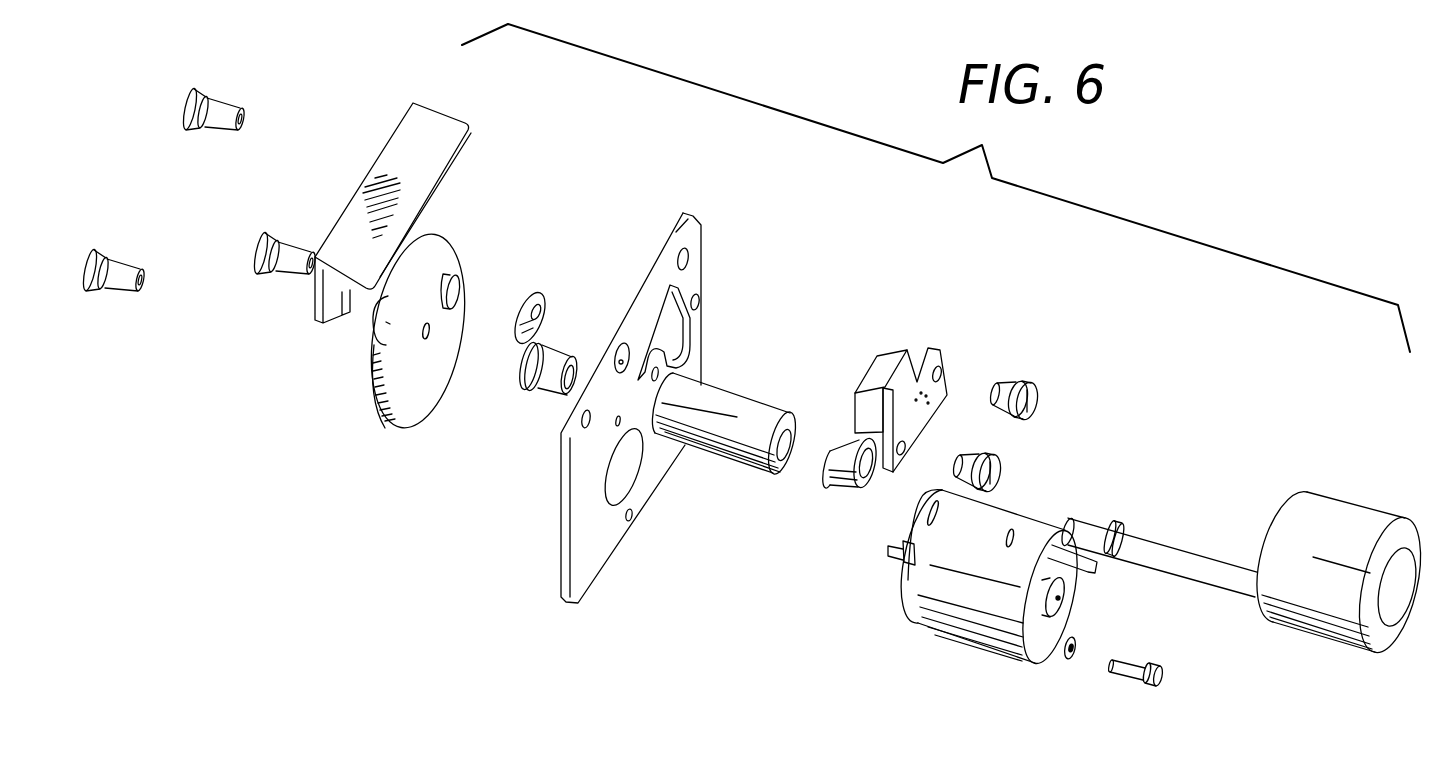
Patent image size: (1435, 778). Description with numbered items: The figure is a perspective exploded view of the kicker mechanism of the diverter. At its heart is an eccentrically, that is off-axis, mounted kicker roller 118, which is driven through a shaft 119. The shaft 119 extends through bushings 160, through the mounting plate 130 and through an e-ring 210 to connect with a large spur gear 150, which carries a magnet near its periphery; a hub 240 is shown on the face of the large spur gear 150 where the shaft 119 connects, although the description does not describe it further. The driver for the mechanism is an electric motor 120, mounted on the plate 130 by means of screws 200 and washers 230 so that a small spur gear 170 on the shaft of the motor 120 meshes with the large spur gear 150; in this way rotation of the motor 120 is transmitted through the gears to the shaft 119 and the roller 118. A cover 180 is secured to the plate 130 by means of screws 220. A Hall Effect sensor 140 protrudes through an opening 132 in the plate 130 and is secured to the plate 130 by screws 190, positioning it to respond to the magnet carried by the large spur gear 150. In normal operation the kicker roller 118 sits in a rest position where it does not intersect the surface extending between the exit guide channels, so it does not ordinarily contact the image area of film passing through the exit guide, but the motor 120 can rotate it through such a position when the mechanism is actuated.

The kicker roller 118 is at (1327, 515).
The shaft 119 is at (1148, 547).
The electric motor 120 is at (967, 603).
The mounting plate 130 is at (697, 270).
The opening 132 is at (665, 328).
The Hall Effect sensor 140 is at (883, 363).
The large spur gear 150 is at (443, 258).
The bushings 160 is at (547, 377).
The small spur gear 170 is at (900, 565).
The cover 180 is at (458, 120).
The screws 190 is at (1002, 380).
The screws 200 is at (1097, 572).
The e-ring 210 is at (537, 288).
The screws 220 is at (230, 104).
The washers 230 is at (1072, 657).
The hub 240 is at (457, 290).